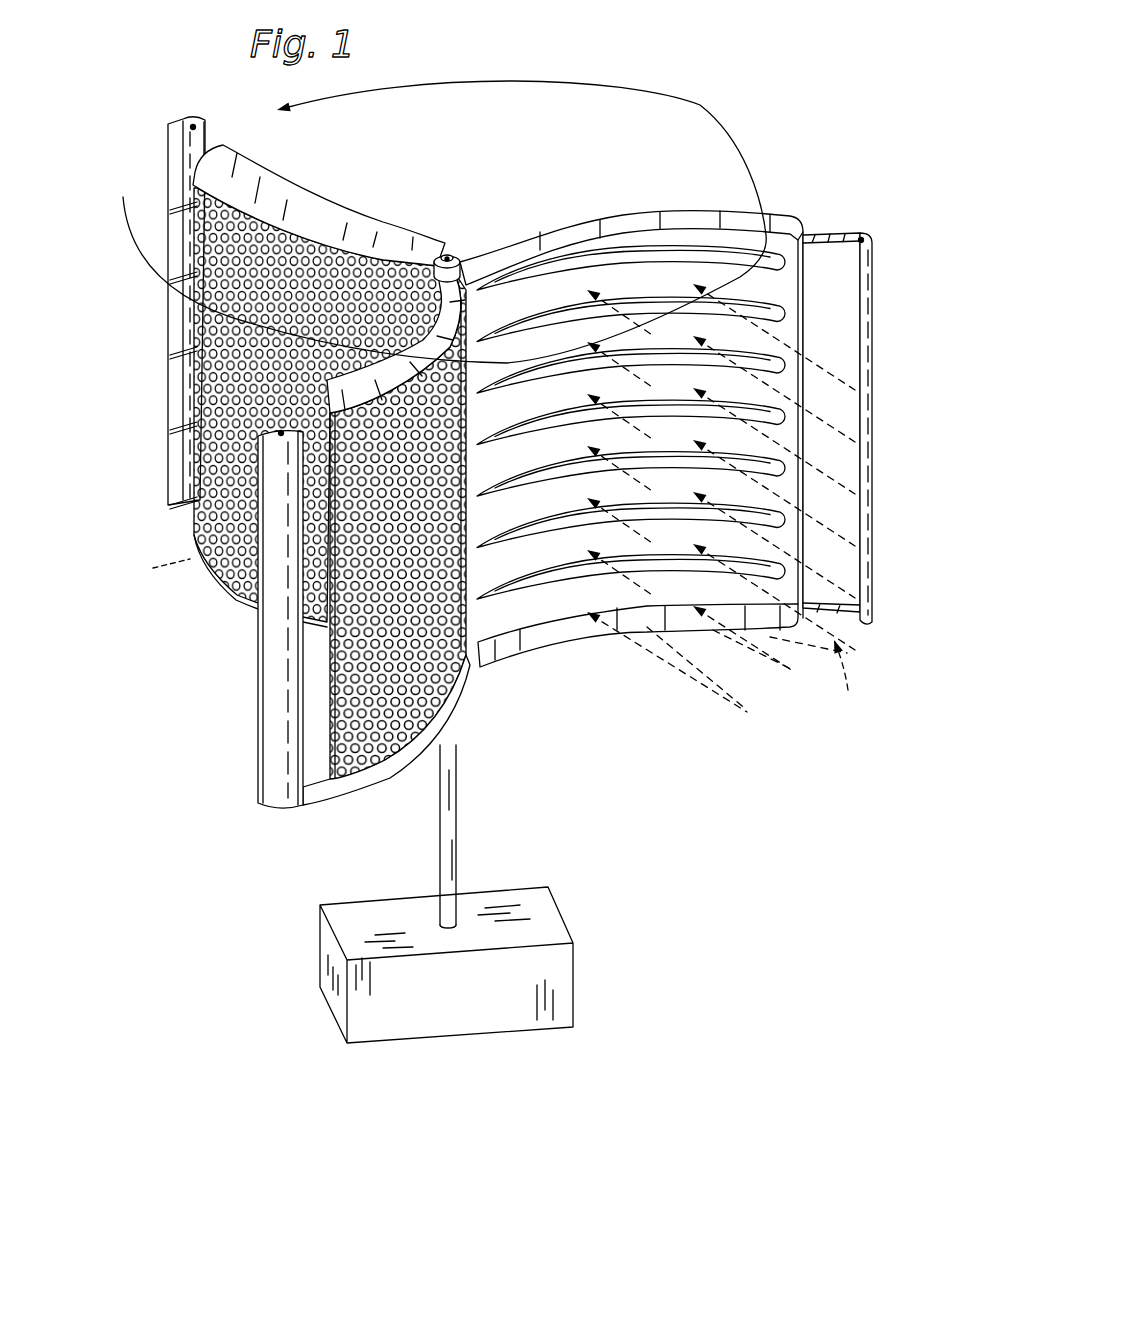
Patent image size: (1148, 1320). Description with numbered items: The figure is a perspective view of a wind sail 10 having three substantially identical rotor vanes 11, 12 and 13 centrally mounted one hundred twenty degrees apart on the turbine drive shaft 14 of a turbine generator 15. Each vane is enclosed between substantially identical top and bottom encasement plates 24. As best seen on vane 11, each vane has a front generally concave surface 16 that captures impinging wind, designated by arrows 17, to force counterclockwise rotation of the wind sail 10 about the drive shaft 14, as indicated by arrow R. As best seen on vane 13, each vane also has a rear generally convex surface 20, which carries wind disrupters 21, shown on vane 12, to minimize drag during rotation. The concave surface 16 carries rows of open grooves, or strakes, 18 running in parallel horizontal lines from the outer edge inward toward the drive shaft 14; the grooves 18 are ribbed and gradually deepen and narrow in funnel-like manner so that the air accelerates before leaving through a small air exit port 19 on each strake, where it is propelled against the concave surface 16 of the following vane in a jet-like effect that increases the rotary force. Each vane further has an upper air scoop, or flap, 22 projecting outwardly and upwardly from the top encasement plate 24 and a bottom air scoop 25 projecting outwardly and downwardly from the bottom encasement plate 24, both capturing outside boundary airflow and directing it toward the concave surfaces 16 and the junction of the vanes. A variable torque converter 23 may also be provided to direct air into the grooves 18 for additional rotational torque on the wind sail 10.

The wind sail 10 is at (502, 557).
The rotor vane 11 is at (752, 195).
The rotor vane 12 is at (158, 348).
The rotor vane 13 is at (232, 705).
The turbine drive shaft 14 is at (460, 793).
The turbine generator 15 is at (320, 944).
The front concave surface 16 is at (523, 557).
The impinging wind arrows 17 is at (755, 702).
The open grooves 18 is at (785, 262).
The air exit port 19 is at (483, 285).
The rear convex surface 20 is at (440, 313).
The wind disrupters 21 is at (241, 580).
The upper air scoop 22 is at (490, 248).
The variable torque converter 23 is at (183, 112).
The encasement plate 24 is at (243, 186).
The bottom air scoop 25 is at (153, 570).
The rotation arrow R is at (726, 202).